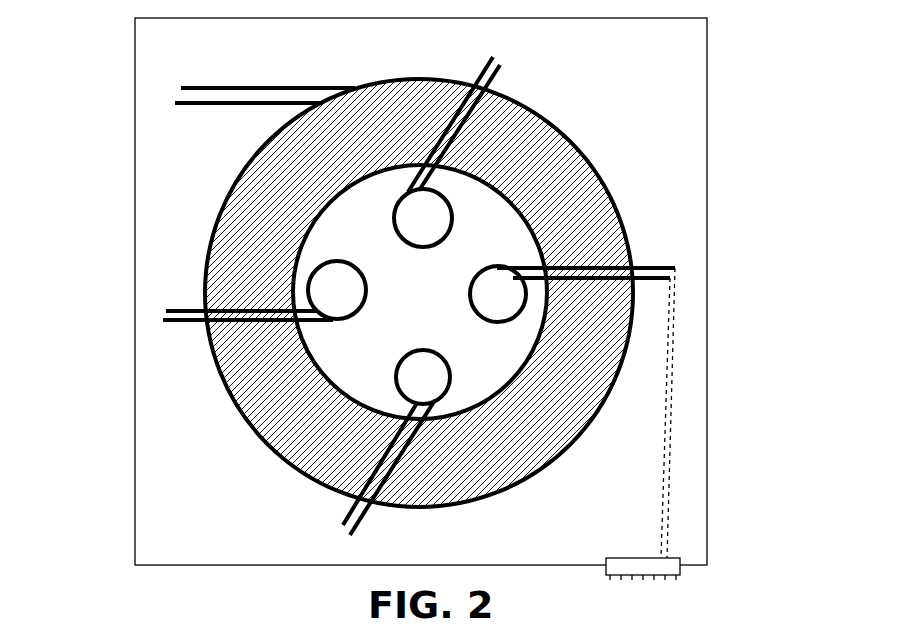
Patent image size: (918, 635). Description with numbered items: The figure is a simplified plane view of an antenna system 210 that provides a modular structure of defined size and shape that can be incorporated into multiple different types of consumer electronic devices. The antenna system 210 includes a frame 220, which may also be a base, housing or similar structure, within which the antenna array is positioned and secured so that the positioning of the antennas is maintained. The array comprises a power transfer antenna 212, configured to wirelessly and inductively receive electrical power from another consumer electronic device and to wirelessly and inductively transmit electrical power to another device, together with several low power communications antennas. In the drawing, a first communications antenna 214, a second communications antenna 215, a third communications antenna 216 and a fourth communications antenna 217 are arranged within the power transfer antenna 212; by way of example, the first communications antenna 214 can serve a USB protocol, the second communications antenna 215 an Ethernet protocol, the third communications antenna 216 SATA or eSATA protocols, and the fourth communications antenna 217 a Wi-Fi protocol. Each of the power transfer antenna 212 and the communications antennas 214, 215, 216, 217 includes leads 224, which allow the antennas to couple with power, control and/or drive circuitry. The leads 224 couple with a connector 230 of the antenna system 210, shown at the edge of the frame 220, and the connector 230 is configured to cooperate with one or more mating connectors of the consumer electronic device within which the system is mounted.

The antenna system 210 is at (112, 45).
The power transfer antenna 212 is at (523, 480).
The first communications antenna 214 is at (447, 203).
The second communications antenna 215 is at (489, 266).
The third communications antenna 216 is at (313, 271).
The fourth communications antenna 217 is at (396, 378).
The frame 220 is at (707, 116).
The leads 224 is at (263, 88).
The connector 230 is at (675, 567).